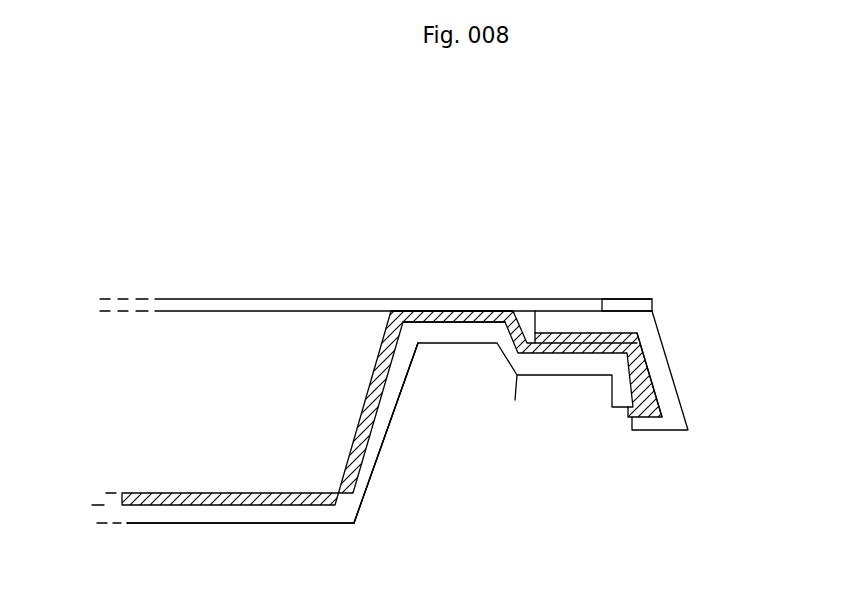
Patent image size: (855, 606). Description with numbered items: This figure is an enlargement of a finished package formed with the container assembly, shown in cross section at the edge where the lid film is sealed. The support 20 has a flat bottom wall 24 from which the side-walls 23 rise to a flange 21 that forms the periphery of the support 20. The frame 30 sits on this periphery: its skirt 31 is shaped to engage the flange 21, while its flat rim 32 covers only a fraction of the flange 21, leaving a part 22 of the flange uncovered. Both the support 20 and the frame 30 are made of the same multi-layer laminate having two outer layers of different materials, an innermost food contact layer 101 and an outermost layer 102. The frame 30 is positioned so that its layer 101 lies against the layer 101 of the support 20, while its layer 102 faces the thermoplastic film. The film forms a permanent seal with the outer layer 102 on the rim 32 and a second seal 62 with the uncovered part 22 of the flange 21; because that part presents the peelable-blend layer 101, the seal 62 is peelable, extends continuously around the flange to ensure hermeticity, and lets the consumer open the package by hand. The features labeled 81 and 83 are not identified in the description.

The support 20 is at (338, 523).
The flange 21 is at (515, 400).
The part of the flange not covered by the rim 22 is at (463, 325).
The side-walls 23 is at (370, 482).
The bottom wall 24 is at (215, 523).
The frame 30 is at (660, 333).
The skirt 31 is at (663, 388).
The rim 32 is at (552, 318).
The second seal 62 is at (428, 311).
The adhesive layer 81 is at (602, 299).
The upper substrate 83 is at (217, 300).
The innermost food contact layer 101 is at (354, 440).
The outermost layer 102 is at (387, 413).